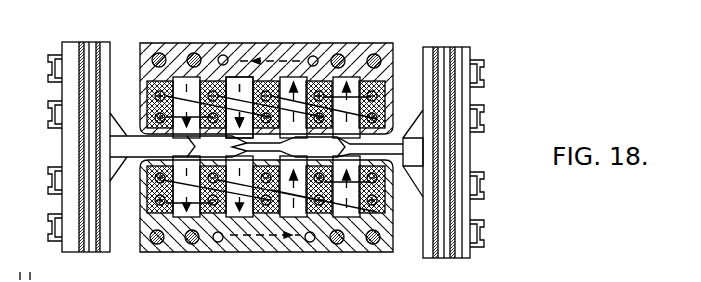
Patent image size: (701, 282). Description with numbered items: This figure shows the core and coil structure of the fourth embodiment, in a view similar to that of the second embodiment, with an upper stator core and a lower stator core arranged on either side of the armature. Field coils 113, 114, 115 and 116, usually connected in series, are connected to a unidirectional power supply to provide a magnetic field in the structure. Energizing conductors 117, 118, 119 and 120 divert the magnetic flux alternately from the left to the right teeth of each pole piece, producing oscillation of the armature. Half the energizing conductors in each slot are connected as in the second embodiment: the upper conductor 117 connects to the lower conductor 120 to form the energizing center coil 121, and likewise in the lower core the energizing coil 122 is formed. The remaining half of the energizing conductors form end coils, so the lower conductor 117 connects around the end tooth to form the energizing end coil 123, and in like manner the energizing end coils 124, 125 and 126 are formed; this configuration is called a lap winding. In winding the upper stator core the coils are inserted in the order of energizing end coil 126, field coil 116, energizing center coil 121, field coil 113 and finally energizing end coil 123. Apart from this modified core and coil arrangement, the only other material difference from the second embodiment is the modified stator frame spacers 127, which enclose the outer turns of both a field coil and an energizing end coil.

The field coil 113 is at (179, 125).
The field coil 114 is at (152, 148).
The field coil 115 is at (347, 216).
The field coil 116 is at (350, 134).
The energizing conductor 117 is at (213, 80).
The energizing conductor 118 is at (222, 215).
The energizing conductor 119 is at (320, 216).
The energizing conductor 120 is at (320, 81).
The energizing coil 121 is at (243, 100).
The energizing coil 122 is at (295, 218).
The energizing coil 123 is at (179, 118).
The energizing end coil 124 is at (173, 215).
The energizing end coil 125 is at (382, 203).
The energizing end coil 126 is at (352, 100).
The stator frame spacer 127 is at (157, 52).